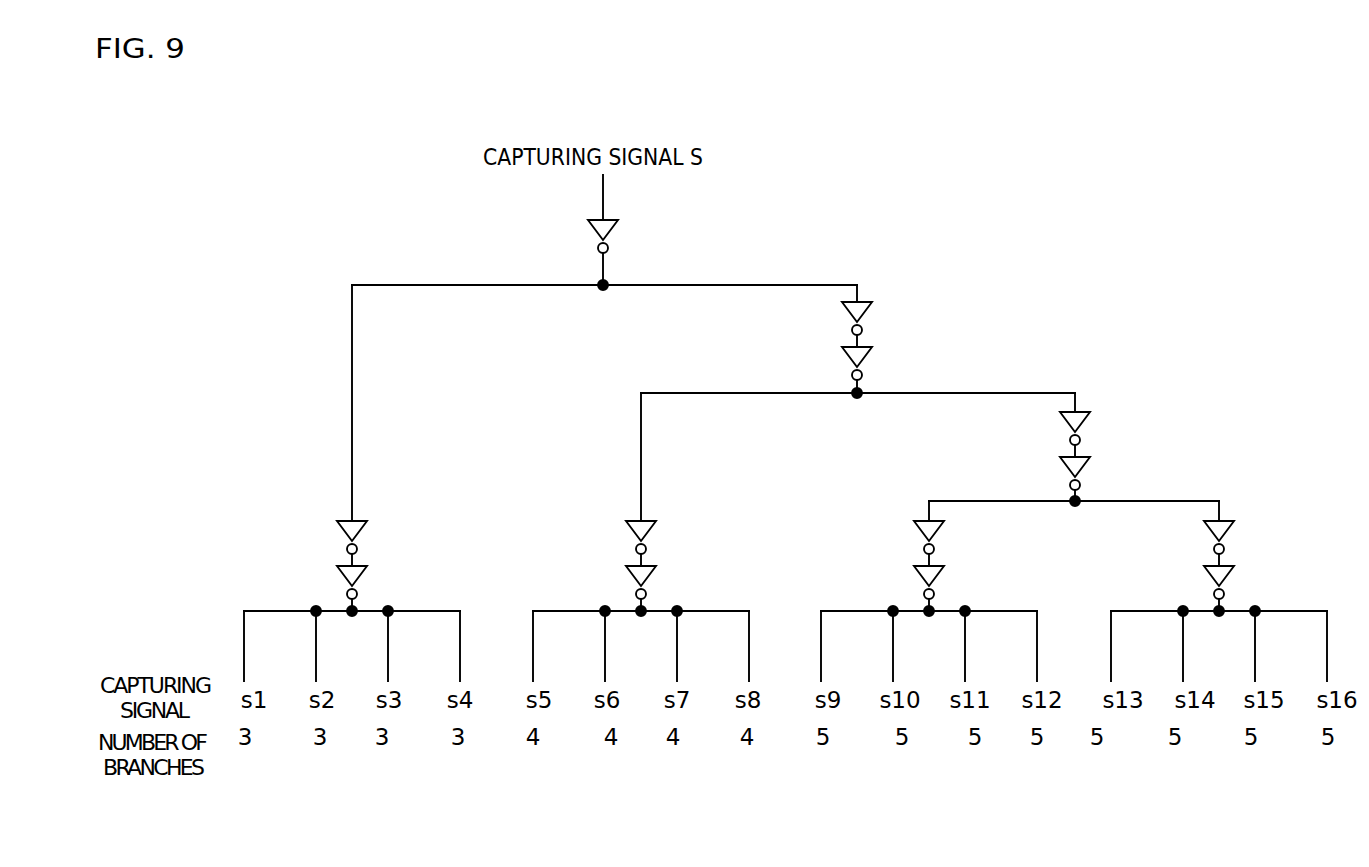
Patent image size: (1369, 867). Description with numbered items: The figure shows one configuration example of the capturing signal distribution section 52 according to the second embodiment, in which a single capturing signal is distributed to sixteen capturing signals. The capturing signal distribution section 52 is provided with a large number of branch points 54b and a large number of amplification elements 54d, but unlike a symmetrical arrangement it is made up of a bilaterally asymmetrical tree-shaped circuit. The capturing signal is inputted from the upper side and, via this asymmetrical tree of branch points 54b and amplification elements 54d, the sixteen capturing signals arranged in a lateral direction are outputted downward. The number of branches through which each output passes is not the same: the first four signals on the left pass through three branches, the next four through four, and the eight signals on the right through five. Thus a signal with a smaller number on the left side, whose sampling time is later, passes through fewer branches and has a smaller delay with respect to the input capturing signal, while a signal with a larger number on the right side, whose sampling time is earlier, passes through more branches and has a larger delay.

The capturing signal distribution section 52 is at (1350, 86).
The amplification element 54d is at (868, 313).
The branch point 54b is at (865, 388).